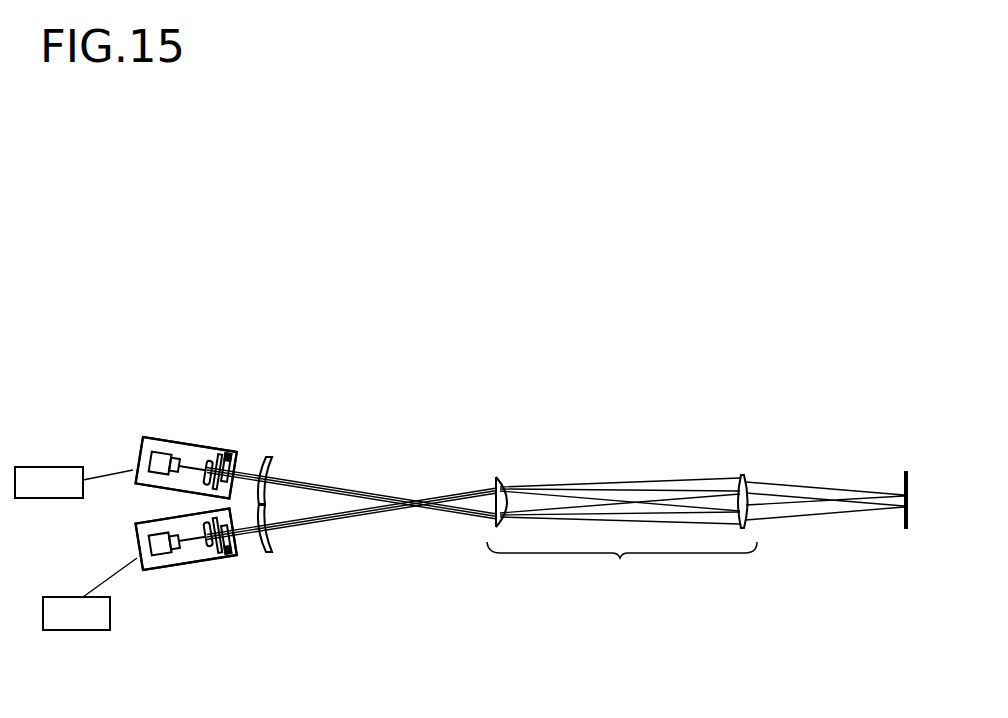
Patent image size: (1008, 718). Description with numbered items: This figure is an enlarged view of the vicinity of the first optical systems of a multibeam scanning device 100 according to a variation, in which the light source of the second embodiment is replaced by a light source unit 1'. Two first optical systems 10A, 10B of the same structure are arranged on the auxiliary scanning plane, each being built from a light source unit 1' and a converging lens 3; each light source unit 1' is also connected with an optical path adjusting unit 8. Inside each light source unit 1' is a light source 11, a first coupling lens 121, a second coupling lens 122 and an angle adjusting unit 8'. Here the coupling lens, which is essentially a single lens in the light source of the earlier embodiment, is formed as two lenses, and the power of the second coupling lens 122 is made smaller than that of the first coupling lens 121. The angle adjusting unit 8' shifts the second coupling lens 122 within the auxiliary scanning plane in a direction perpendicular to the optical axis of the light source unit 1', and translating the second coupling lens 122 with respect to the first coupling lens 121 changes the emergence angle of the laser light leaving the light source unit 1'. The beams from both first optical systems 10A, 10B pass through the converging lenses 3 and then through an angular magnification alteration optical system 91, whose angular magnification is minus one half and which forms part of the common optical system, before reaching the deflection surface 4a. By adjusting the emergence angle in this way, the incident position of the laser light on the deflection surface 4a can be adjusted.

The multibeam scanning device 100 is at (527, 373).
The optical path adjusting unit 8 is at (76, 551).
The first optical system 10A is at (257, 433).
The first optical system 10B is at (280, 585).
The light source unit 1' is at (185, 525).
The light source 11 is at (148, 458).
The first coupling lens 121 is at (207, 462).
The second coupling lens 122 is at (218, 452).
The angle adjusting unit 8' is at (247, 498).
The converging lens 3 is at (271, 460).
The angular magnification alteration optical system 91 is at (622, 533).
The deflection surface 4a is at (903, 518).